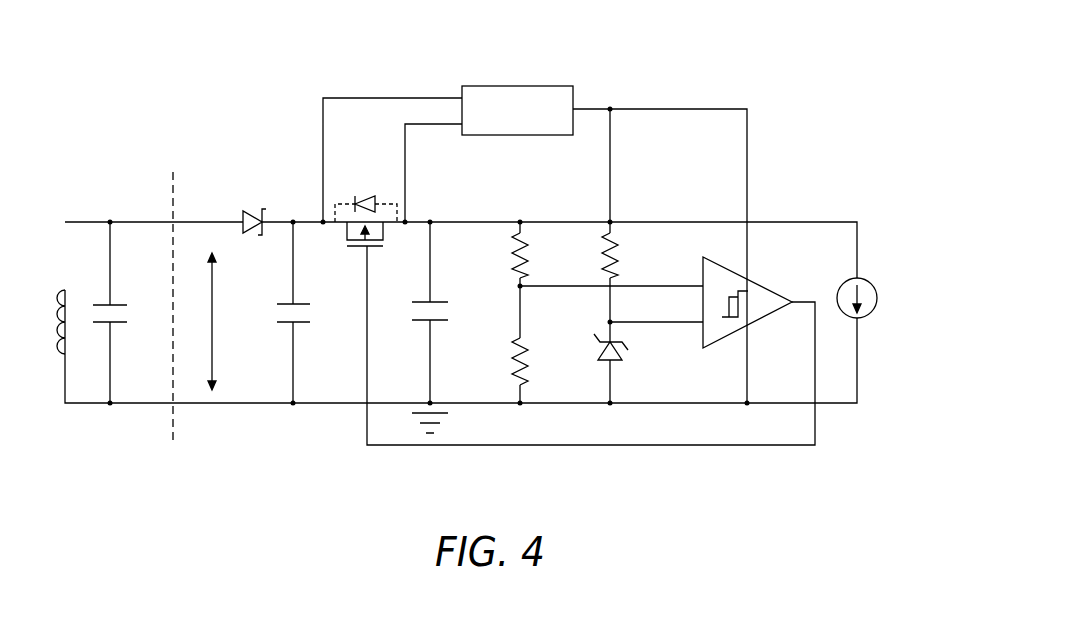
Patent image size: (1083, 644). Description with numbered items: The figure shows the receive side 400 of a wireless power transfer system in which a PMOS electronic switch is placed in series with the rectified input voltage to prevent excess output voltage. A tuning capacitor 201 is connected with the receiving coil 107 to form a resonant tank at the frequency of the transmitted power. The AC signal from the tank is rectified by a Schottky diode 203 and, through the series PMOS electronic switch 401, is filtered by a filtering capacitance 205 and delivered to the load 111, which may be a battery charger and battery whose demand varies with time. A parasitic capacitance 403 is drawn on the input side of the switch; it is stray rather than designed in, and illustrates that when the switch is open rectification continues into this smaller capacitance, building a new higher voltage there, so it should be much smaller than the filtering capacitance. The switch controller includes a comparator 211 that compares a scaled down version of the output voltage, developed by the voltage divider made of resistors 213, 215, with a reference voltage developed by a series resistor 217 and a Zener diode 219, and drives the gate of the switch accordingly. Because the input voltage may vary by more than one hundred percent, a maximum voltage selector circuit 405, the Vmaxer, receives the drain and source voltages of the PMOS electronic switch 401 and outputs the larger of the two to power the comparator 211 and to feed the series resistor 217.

The receive side 400 is at (215, 145).
The receiving coil 107 is at (57, 291).
The tuning capacitor 201 is at (115, 305).
The Schottky diode 203 is at (242, 216).
The parasitic capacitance 403 is at (288, 323).
The PMOS electronic switch 401 is at (359, 250).
The filtering capacitance 205 is at (440, 302).
The maximum voltage selector circuit 405 is at (517, 86).
The resistor 213 is at (522, 233).
The resistor 215 is at (513, 380).
The series resistor 217 is at (627, 233).
The Zener diode 219 is at (606, 362).
The comparator 211 is at (763, 318).
The load 111 is at (864, 281).